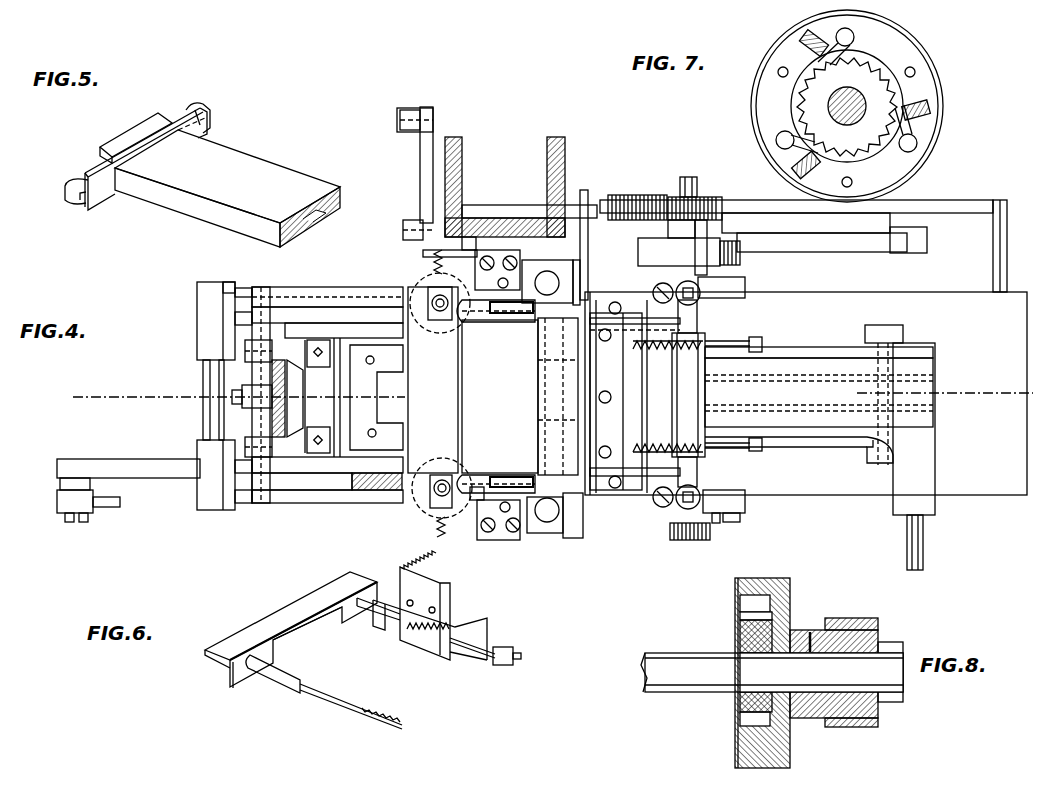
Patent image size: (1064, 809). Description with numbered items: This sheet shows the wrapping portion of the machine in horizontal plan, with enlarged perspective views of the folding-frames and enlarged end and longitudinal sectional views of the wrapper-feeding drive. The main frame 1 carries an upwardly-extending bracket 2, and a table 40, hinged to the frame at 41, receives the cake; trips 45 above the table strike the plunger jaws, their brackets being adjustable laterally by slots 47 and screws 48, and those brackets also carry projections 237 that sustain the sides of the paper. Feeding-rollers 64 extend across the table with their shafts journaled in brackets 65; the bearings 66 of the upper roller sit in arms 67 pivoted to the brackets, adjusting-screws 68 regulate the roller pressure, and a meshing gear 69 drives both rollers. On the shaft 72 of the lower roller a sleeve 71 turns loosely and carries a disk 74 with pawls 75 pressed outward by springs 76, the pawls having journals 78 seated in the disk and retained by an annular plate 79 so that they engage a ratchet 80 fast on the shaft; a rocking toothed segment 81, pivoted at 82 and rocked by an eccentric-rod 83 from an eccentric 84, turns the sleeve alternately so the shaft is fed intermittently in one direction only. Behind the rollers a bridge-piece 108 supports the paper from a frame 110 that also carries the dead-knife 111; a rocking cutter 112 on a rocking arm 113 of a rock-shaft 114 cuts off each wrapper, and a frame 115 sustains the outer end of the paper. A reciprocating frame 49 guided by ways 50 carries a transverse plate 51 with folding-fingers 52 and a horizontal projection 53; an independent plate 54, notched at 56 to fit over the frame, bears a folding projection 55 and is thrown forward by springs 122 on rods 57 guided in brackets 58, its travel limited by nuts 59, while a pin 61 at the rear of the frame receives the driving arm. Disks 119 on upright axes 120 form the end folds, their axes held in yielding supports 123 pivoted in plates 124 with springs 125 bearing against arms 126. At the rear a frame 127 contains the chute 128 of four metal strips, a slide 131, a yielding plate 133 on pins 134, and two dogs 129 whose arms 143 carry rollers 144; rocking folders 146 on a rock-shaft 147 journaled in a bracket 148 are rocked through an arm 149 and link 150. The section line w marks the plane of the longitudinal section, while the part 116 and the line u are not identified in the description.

In FIG. 4, the frame 1 is at (806, 393).
In FIG. 4, the upwardly-extending bracket 2 is at (462, 170).
In FIG. 4, the table or bed 40 is at (697, 396).
In FIG. 4, the hinge 41 is at (885, 325).
In FIG. 4, the trips 45 is at (528, 313).
In FIG. 4, the slots 47 is at (547, 271).
In FIG. 4, the screws 48 is at (575, 200).
In FIG. 5, the longitudinally-reciprocating frame 49 is at (227, 188).
In FIG. 4, the longitudinally-reciprocating frame 49 is at (819, 410).
In FIG. 5, the ways 50 is at (316, 222).
In FIG. 5, the transverse plate 51 is at (100, 176).
In FIG. 5, the folding-fingers 52 is at (67, 186).
In FIG. 5, the horizontal projection 53 is at (122, 140).
In FIG. 6, the independent plate 54 is at (250, 690).
In FIG. 6, the folding projection 55 is at (290, 612).
In FIG. 6, the notch 56 is at (308, 640).
In FIG. 6, the rods 57 is at (300, 695).
In FIG. 4, the rods 57 is at (735, 346).
In FIG. 6, the brackets 58 is at (477, 604).
In FIG. 4, the brackets 58 is at (630, 296).
In FIG. 6, the adjustable nuts or stops 59 is at (505, 665).
In FIG. 4, the adjustable nuts or stops 59 is at (758, 337).
In FIG. 4, the pin 61 is at (923, 552).
In FIG. 4, the feeding-rollers 64 is at (688, 395).
In FIG. 4, the brackets 65 is at (745, 288).
In FIG. 4, the bearings 66 is at (660, 283).
In FIG. 4, the arms 67 is at (702, 230).
In FIG. 4, the adjusting-screws 68 is at (700, 300).
In FIG. 4, the gear 69 is at (690, 540).
In FIG. 8, the sleeve 71 is at (878, 635).
In FIG. 4, the sleeve 71 is at (680, 197).
In FIG. 7, the shaft 72 is at (866, 104).
In FIG. 8, the shaft 72 is at (872, 735).
In FIG. 4, the shaft 72 is at (695, 185).
In FIG. 7, the disk 74 is at (932, 48).
In FIG. 8, the disk 74 is at (775, 578).
In FIG. 4, the disk 74 is at (679, 252).
In FIG. 7, the pawls 75 is at (855, 38).
In FIG. 8, the pawls 75 is at (740, 617).
In FIG. 7, the springs 76 is at (805, 38).
In FIG. 8, the short journals 78 is at (770, 600).
In FIG. 7, the annular plate 79 is at (847, 104).
In FIG. 8, the annular plate 79 is at (735, 592).
In FIG. 7, the ratchet 80 is at (847, 107).
In FIG. 8, the ratchet 80 is at (740, 640).
In FIG. 4, the rocking toothed segment 81 is at (640, 195).
In FIG. 4, the pivot 82 is at (1007, 198).
In FIG. 4, the eccentric-rod 83 is at (850, 250).
In FIG. 4, the eccentric 84 is at (740, 254).
In FIG. 4, the bridge-piece 108 is at (538, 355).
In FIG. 6, the frame 110 is at (425, 605).
In FIG. 4, the frame 110 is at (630, 493).
In FIG. 4, the stationary blade or dead-knife 111 is at (600, 493).
In FIG. 4, the rocking cutter 112 is at (635, 302).
In FIG. 4, the rocking arm 113 is at (585, 200).
In FIG. 4, the rock-shaft 114 is at (495, 205).
In FIG. 4, the frame 115 is at (433, 380).
In FIG. 4, the bracket 116 is at (420, 153).
In FIG. 4, the disks 119 is at (425, 282).
In FIG. 4, the upright axes 120 is at (440, 315).
In FIG. 6, the springs 122 is at (420, 632).
In FIG. 4, the springs 122 is at (650, 440).
In FIG. 4, the yielding supports 123 is at (440, 250).
In FIG. 4, the plates 124 is at (510, 250).
In FIG. 4, the springs 125 is at (434, 262).
In FIG. 4, the arms 126 is at (470, 237).
In FIG. 4, the frame 127 is at (283, 437).
In FIG. 4, the guideway or chute 128 is at (300, 437).
In FIG. 4, the dogs 129 is at (320, 307).
In FIG. 4, the reciprocating slide 131 is at (242, 400).
In FIG. 4, the plate 133 is at (354, 397).
In FIG. 4, the pins 134 is at (377, 403).
In FIG. 4, the arms 143 is at (255, 287).
In FIG. 4, the rollers 144 is at (245, 352).
In FIG. 4, the rocking folders 146 is at (345, 323).
In FIG. 4, the rock-shaft 147 is at (203, 385).
In FIG. 4, the bracket 148 is at (195, 300).
In FIG. 4, the arm 149 is at (128, 460).
In FIG. 4, the link 150 is at (110, 507).
In FIG. 4, the projections 237 is at (480, 322).
In FIG. 4, the axis u is at (948, 383).
In FIG. 4, the section line w is at (239, 395).